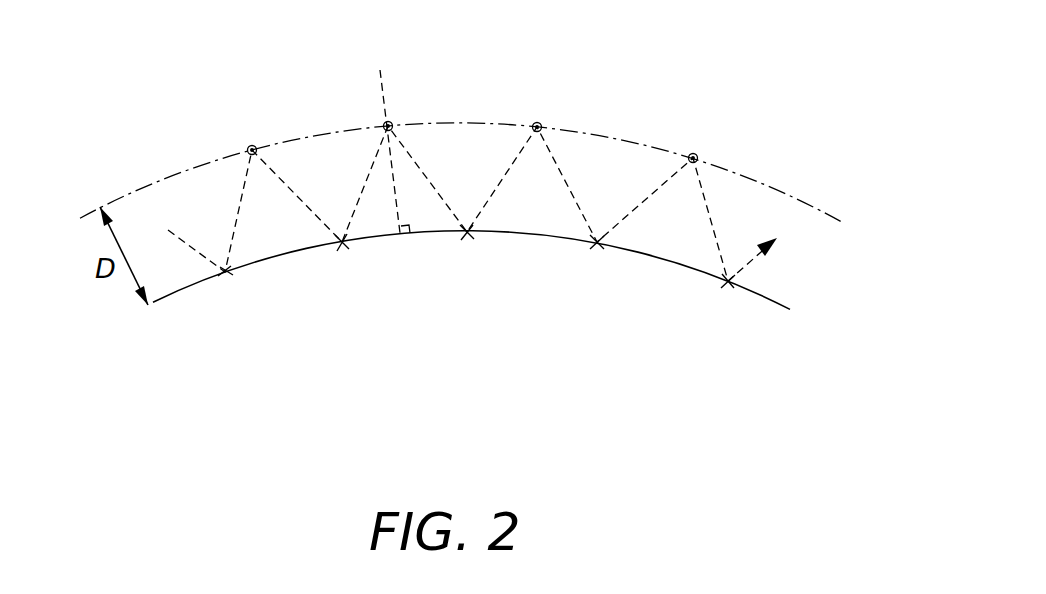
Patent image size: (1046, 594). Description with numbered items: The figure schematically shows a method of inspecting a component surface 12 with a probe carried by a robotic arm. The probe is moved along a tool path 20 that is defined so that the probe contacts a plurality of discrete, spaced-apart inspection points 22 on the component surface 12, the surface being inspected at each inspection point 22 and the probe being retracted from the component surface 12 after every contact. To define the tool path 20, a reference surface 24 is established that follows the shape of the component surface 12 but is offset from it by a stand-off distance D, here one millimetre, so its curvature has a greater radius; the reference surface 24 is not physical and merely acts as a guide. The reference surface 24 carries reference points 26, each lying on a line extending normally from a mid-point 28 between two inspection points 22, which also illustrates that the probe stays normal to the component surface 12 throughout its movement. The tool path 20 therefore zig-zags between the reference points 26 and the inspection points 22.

The component surface 12 is at (668, 262).
The tool path 20 is at (302, 198).
The inspection points 22 is at (342, 245).
The reference surface 24 is at (615, 138).
The reference points 26 is at (252, 145).
The mid-point 28 is at (400, 237).